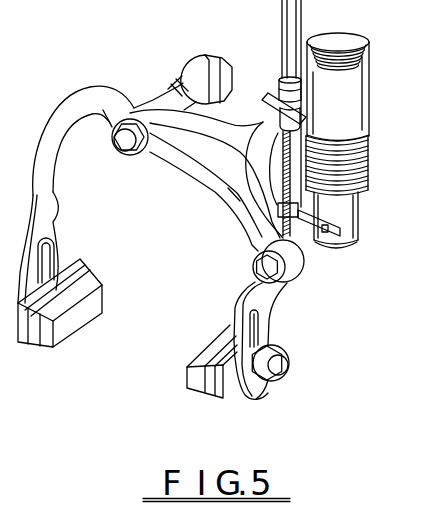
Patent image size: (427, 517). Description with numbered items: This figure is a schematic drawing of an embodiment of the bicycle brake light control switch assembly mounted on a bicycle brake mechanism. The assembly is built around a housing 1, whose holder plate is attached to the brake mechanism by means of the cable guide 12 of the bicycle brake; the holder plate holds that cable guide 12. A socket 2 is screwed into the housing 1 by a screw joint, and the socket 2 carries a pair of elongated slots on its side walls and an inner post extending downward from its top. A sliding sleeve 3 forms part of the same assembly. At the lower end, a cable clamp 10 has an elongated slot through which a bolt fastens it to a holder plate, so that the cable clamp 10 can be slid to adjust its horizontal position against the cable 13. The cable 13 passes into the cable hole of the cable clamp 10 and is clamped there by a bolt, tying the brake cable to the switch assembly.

The housing 1 is at (348, 101).
The socket 2 is at (366, 163).
The sliding sleeve 3 is at (356, 207).
The cable clamp 10 is at (340, 243).
The cable guide 12 is at (282, 97).
The cable 13 is at (264, 120).